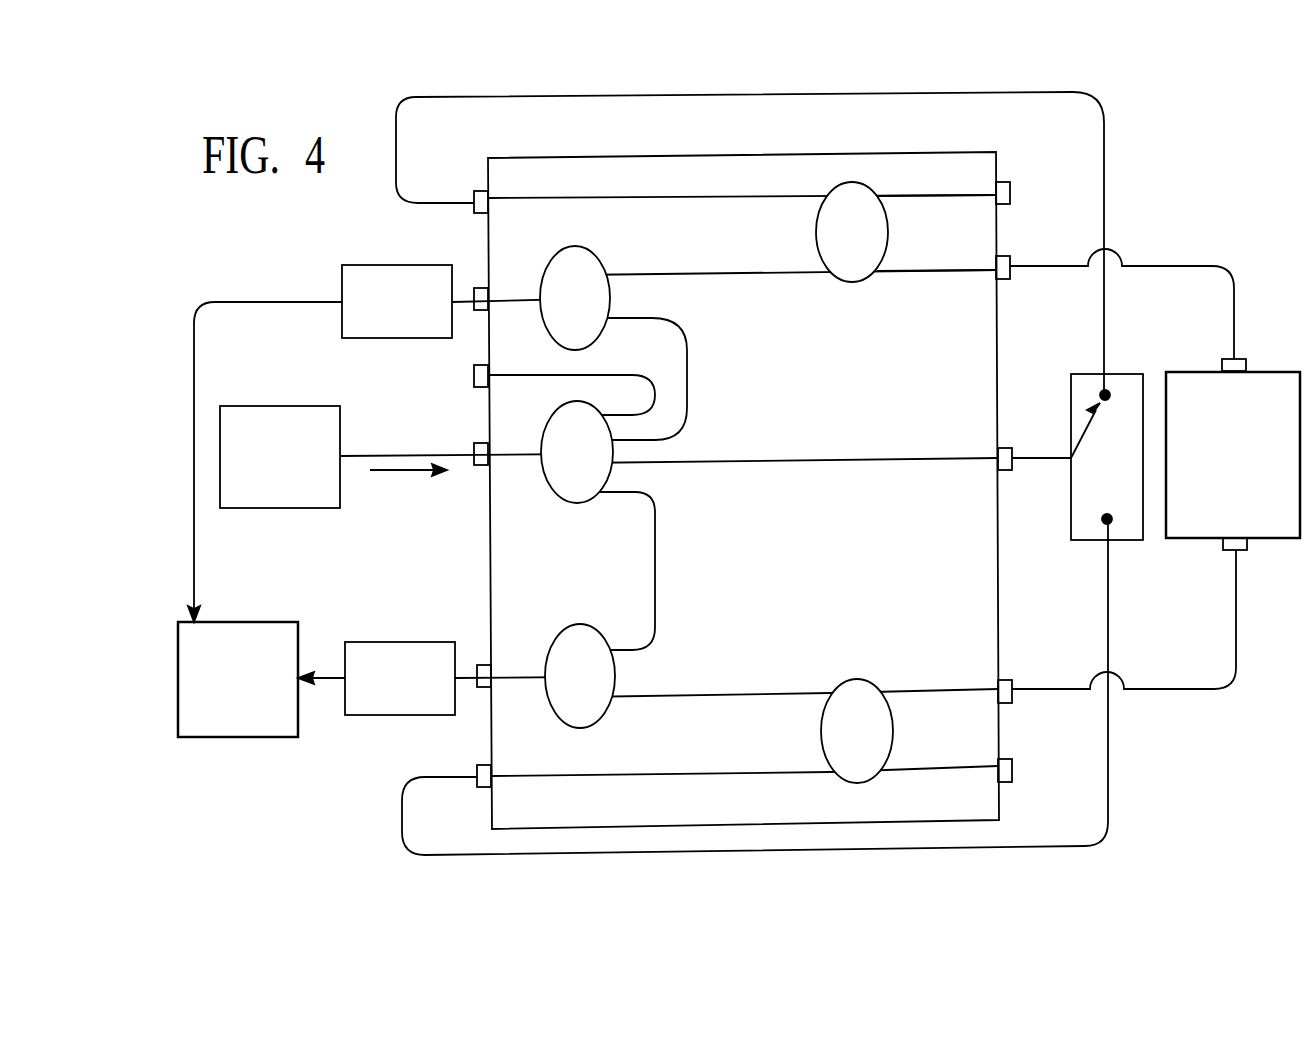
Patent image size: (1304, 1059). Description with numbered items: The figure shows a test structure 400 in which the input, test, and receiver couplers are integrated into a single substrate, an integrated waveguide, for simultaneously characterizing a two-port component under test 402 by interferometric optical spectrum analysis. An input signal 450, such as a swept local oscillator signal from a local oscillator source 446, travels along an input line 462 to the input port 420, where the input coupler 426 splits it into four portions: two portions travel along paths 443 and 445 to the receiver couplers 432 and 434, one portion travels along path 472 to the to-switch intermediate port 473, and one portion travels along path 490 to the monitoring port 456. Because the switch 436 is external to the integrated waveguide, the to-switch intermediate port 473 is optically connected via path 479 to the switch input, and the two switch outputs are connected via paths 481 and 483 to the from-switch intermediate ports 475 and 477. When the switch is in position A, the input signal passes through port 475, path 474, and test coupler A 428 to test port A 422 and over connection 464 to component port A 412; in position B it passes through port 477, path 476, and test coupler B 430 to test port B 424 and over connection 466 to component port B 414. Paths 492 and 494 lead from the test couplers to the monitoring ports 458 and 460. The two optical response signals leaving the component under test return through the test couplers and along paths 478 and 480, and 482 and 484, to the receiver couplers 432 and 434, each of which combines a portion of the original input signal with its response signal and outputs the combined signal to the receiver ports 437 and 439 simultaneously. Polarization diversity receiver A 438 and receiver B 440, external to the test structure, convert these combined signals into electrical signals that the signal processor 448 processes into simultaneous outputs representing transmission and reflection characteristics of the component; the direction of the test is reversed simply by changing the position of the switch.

The test structure 400 is at (682, 153).
The component under test 402 is at (1182, 372).
The component port A 412 is at (1247, 365).
The component port B 414 is at (1247, 550).
The input port 420 is at (474, 451).
The test port A 422 is at (1008, 278).
The test port B 424 is at (1010, 680).
The input coupler 426 is at (578, 503).
The test coupler A 428 is at (853, 282).
The test coupler B 430 is at (858, 677).
The receiver coupler 432 is at (568, 250).
The receiver coupler 434 is at (578, 622).
The switch 436 is at (1078, 373).
The receiver port 437 is at (476, 310).
The receiver A 438 is at (353, 338).
The receiver port 439 is at (481, 688).
The receiver B 440 is at (405, 715).
The transmission line 443 is at (687, 380).
The transmission line 445 is at (655, 557).
The local oscillator source 446 is at (290, 508).
The signal processor 448 is at (248, 737).
The input signal 450 is at (407, 519).
The monitoring port 456 is at (474, 376).
The monitoring port 458 is at (1003, 195).
The monitoring port 460 is at (1008, 782).
The input line 462 is at (368, 455).
The connection line A 464 is at (1165, 266).
The connection line B 466 is at (1170, 690).
The transmission line 472 is at (827, 462).
The to-switch intermediate port 473 is at (1010, 447).
The transmission line 474 is at (690, 197).
The from-switch intermediate port 475 is at (481, 215).
The transmission line 476 is at (697, 775).
The from-switch intermediate port 477 is at (481, 787).
The transmission line 478 is at (963, 271).
The path 479 is at (1012, 470).
The transmission line 480 is at (690, 275).
The path 481 is at (1104, 160).
The transmission line 482 is at (968, 694).
The path 483 is at (1108, 800).
The transmission line 484 is at (697, 697).
The transmission line 490 is at (515, 374).
The transmission line 492 is at (963, 196).
The transmission line 494 is at (968, 768).